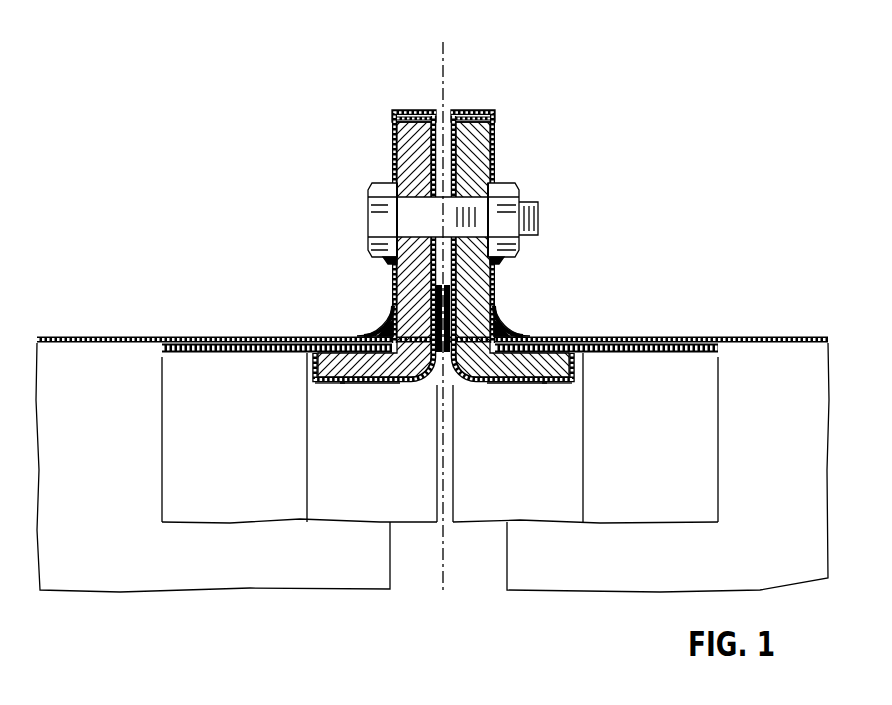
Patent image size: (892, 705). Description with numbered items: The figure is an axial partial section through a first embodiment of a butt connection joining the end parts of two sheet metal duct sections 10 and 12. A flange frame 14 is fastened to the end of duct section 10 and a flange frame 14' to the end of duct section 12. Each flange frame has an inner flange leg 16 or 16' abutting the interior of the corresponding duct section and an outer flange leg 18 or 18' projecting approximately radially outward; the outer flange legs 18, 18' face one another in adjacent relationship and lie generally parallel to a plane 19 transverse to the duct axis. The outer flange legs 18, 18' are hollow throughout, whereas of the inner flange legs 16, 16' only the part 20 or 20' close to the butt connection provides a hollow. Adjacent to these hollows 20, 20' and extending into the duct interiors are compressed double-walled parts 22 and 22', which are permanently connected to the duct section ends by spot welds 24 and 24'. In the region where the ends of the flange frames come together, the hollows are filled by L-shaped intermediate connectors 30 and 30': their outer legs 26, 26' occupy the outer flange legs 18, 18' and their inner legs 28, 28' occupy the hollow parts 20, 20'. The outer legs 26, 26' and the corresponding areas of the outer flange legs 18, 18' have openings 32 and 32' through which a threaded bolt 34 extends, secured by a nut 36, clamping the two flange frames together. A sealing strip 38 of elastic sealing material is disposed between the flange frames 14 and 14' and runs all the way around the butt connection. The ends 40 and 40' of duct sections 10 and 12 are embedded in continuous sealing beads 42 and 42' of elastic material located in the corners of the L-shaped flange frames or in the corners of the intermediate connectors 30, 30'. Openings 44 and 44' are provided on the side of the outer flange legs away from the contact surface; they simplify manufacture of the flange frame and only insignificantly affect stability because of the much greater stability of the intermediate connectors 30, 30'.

The sheet metal duct section 10 is at (84, 336).
The sheet metal duct section 12 is at (786, 336).
The flange frame 14 is at (392, 68).
The flange frame 14' is at (498, 74).
The inner flange leg 16 is at (343, 299).
The inner flange leg 16' is at (551, 298).
The outer flange leg 18 is at (375, 201).
The outer flange leg 18' is at (520, 197).
The plane 19 is at (446, 561).
The hollow part of inner flange leg 20 is at (370, 431).
The hollow part of inner flange leg 20' is at (517, 431).
The compressed double-walled part 22 is at (250, 391).
The compressed double-walled part 22' is at (632, 391).
The spot weld 24 is at (240, 305).
The spot weld 24' is at (635, 302).
The outer leg of intermediate connector 26 is at (374, 196).
The outer leg of intermediate connector 26' is at (513, 195).
The inner leg of intermediate connector 28 is at (330, 431).
The inner leg of intermediate connector 28' is at (553, 444).
The intermediate connector 30 is at (348, 246).
The intermediate connector 30' is at (540, 246).
The opening 32 is at (338, 194).
The opening 32' is at (551, 194).
The threaded bolt 34 is at (367, 188).
The nut 36 is at (520, 188).
The sealing strip 38 is at (483, 386).
The end of duct section 40 is at (360, 301).
The end of duct section 40' is at (529, 301).
The sealing bead 42 is at (337, 314).
The sealing bead 42' is at (547, 314).
The opening 44 is at (405, 173).
The opening 44' is at (516, 167).